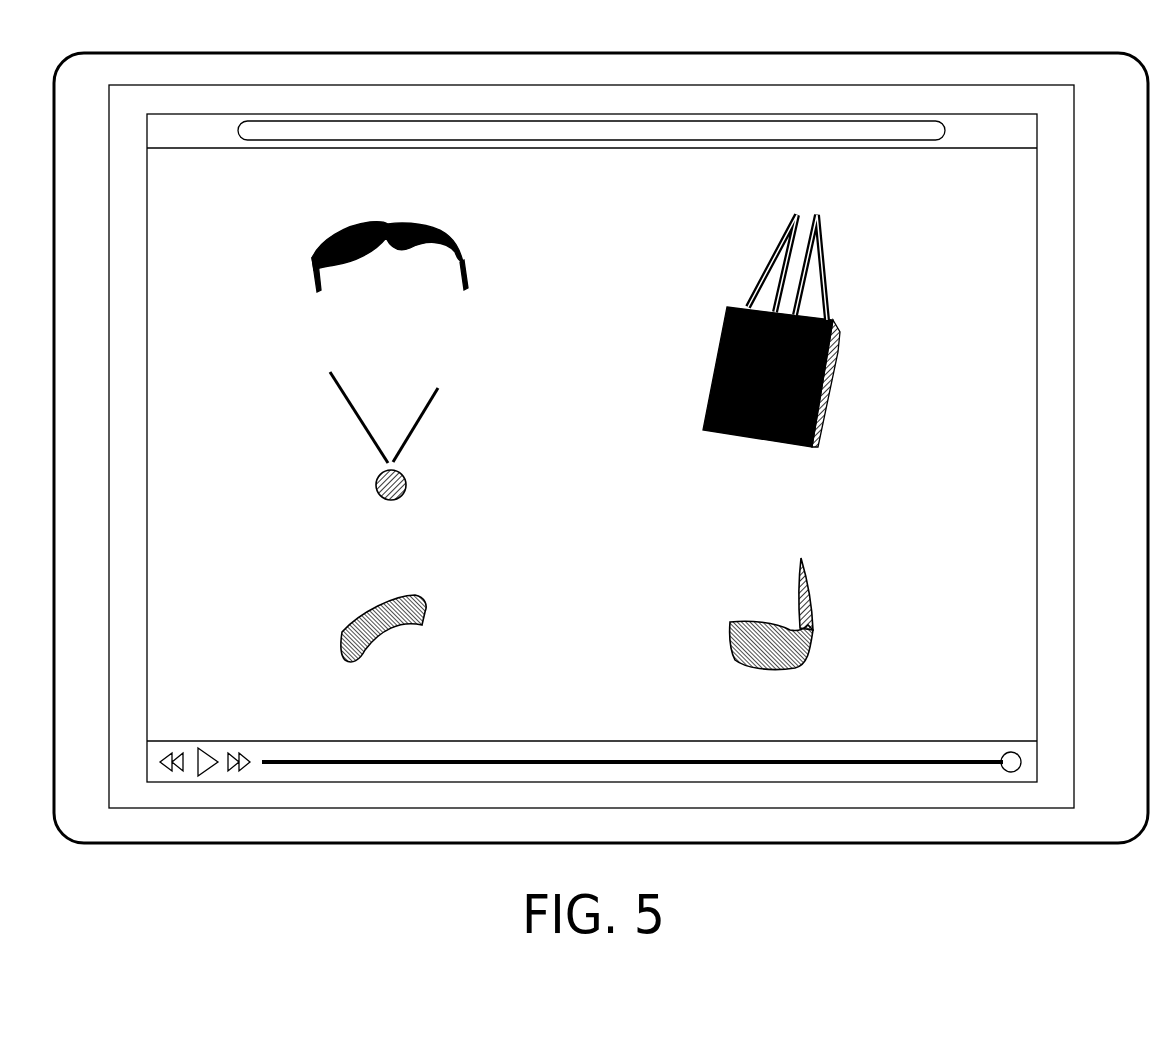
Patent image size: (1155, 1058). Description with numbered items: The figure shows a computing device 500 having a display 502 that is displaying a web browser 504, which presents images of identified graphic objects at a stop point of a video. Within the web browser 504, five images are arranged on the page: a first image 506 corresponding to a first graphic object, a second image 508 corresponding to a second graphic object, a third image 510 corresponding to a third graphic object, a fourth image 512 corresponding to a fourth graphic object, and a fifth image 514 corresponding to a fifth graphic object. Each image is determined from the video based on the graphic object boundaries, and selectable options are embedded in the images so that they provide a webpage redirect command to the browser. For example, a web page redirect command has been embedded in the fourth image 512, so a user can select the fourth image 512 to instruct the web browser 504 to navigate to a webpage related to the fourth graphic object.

The computing device 500 is at (170, 52).
The display 502 is at (250, 85).
The web browser 504 is at (310, 113).
The first image 506 is at (312, 256).
The second image 508 is at (374, 485).
The third image 510 is at (342, 640).
The fourth image 512 is at (710, 366).
The fifth image 514 is at (730, 634).